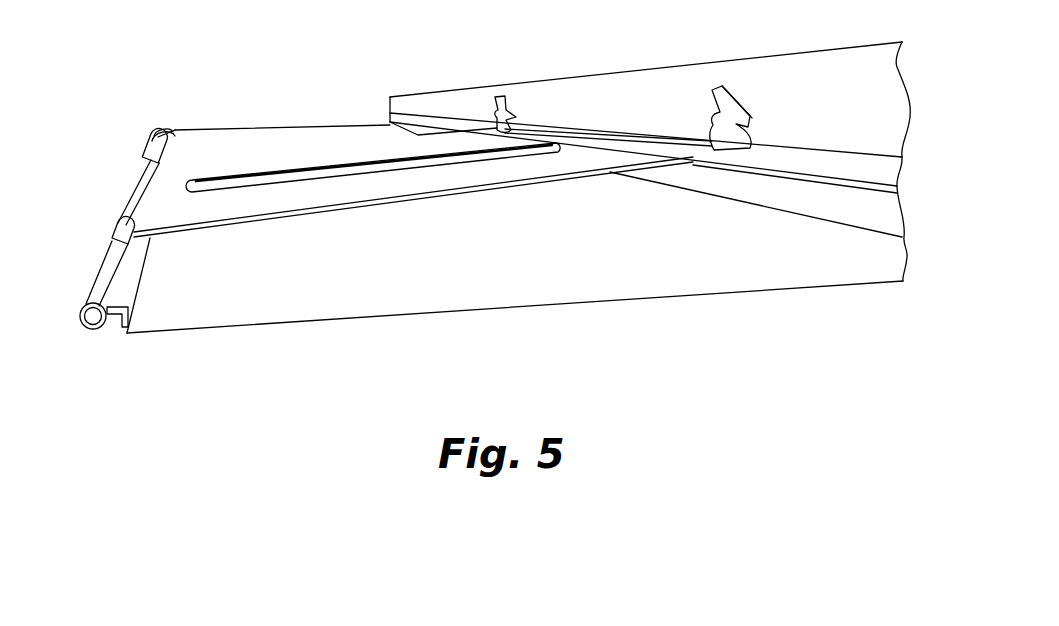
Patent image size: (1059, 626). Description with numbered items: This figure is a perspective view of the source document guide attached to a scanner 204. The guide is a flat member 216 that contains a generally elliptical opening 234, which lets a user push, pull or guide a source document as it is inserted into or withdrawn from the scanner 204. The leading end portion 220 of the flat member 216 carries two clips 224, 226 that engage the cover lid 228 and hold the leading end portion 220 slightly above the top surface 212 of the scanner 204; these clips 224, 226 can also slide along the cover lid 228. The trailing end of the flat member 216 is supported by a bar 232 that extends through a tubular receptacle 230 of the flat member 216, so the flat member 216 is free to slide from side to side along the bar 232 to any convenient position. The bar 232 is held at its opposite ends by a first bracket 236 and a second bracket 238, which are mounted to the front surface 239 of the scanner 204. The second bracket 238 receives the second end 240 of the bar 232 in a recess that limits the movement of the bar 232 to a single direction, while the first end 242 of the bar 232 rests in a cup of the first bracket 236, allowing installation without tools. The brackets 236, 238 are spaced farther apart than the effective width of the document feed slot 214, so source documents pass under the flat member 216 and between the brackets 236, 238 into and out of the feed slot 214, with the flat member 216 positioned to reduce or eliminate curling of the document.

The scanner 204 is at (830, 287).
The top surface 212 is at (428, 271).
The source document feed slot 214 is at (815, 147).
The flat member 216 is at (264, 147).
The leading end portion 220 is at (530, 133).
The clip 224 is at (742, 88).
The clip 226 is at (493, 92).
The cover lid 228 is at (630, 118).
The tubular receptacle 230 is at (122, 203).
The bar 232 is at (93, 277).
The opening 234 is at (330, 160).
The first bracket 236 is at (110, 324).
The second bracket 238 is at (155, 128).
The front surface 239 is at (125, 278).
The second end of the bar 240 is at (148, 148).
The first end of the bar 242 is at (88, 288).